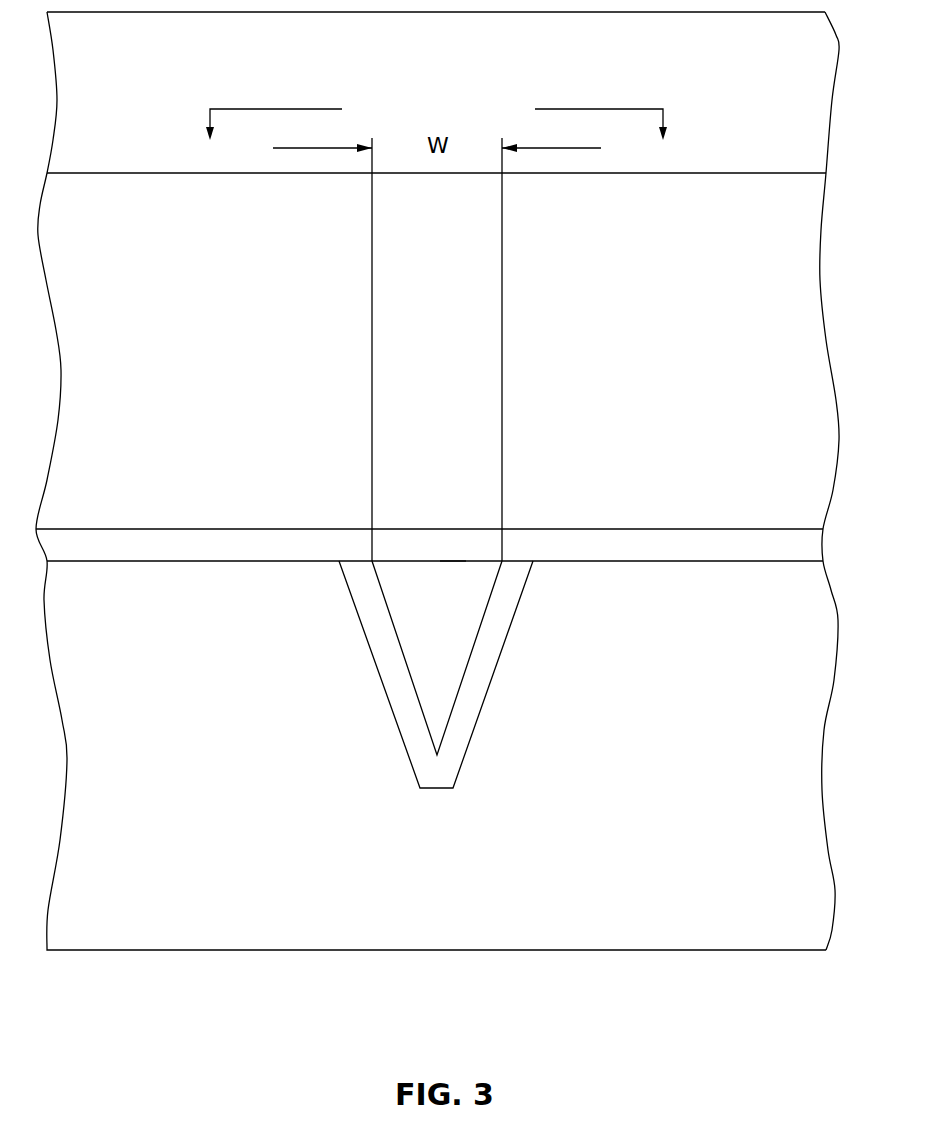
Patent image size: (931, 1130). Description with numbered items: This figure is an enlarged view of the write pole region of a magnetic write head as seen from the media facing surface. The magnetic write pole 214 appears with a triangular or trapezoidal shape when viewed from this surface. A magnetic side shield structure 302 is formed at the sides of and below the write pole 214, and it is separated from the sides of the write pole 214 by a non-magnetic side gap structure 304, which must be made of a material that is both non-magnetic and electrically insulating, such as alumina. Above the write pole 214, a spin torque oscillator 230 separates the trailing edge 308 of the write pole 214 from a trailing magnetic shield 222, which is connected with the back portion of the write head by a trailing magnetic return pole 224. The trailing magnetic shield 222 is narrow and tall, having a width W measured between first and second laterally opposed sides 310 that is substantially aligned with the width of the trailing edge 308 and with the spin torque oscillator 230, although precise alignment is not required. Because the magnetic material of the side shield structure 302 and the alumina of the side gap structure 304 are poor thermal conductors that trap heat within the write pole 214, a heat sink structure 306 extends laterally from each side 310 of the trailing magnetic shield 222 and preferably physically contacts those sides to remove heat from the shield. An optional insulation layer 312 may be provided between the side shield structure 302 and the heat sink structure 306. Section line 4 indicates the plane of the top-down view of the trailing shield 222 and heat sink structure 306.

The trailing magnetic return pole 224 is at (483, 59).
The line 4- 4 is at (440, 136).
The heat sink structure 306 is at (217, 350).
The laterally opposed sides 310 is at (372, 235).
The trailing magnetic shield 222 is at (459, 352).
The insulation layer 312 is at (200, 544).
The spin torque oscillator 230 is at (447, 544).
The trailing edge 308 is at (453, 561).
The magnetic write pole 214 is at (455, 605).
The non-magnetic side gap structure 304 is at (480, 670).
The magnetic side shield structure 302 is at (674, 697).